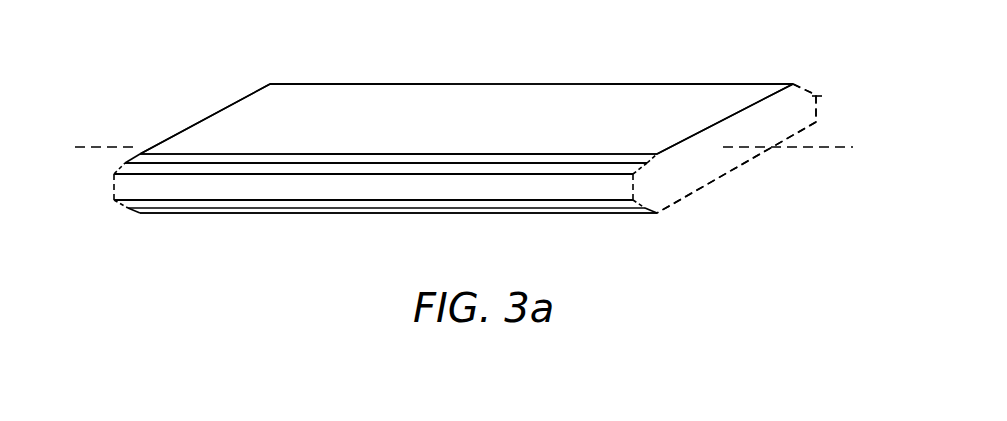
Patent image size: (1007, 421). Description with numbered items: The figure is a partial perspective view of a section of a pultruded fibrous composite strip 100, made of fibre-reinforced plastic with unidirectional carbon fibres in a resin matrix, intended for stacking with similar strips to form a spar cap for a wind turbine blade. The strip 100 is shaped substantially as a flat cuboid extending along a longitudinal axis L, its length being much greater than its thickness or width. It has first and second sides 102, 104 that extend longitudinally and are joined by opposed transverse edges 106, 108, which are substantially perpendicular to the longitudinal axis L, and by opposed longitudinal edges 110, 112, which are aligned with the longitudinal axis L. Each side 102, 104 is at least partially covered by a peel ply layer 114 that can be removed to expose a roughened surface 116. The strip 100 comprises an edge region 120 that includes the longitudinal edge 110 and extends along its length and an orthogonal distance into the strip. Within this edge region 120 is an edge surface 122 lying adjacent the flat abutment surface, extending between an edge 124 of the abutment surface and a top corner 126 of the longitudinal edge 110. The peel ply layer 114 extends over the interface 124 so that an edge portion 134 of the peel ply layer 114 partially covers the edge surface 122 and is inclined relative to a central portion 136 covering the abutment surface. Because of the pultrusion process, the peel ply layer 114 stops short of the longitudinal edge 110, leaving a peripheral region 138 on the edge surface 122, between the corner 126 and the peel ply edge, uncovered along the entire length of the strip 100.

The pultruded fibrous composite strip 100 is at (130, 50).
The first side 102 is at (489, 99).
The second side 104 is at (381, 216).
The transverse edge 106 is at (723, 155).
The transverse edge 108 is at (218, 110).
The longitudinal edge 110 is at (575, 185).
The longitudinal edge 112 is at (820, 95).
The peel ply layer 114 is at (638, 90).
The roughened surface 116 is at (362, 90).
The edge region 120 is at (667, 188).
The edge surface 122 is at (372, 170).
The edge of the abutment surface 124 is at (252, 152).
The top corner of the longitudinal edge 126 is at (176, 178).
The edge portion of the peel ply layer 134 is at (443, 155).
The central portion of the peel ply layer 136 is at (567, 127).
The peripheral region 138 is at (270, 168).
The longitudinal axis L is at (471, 147).